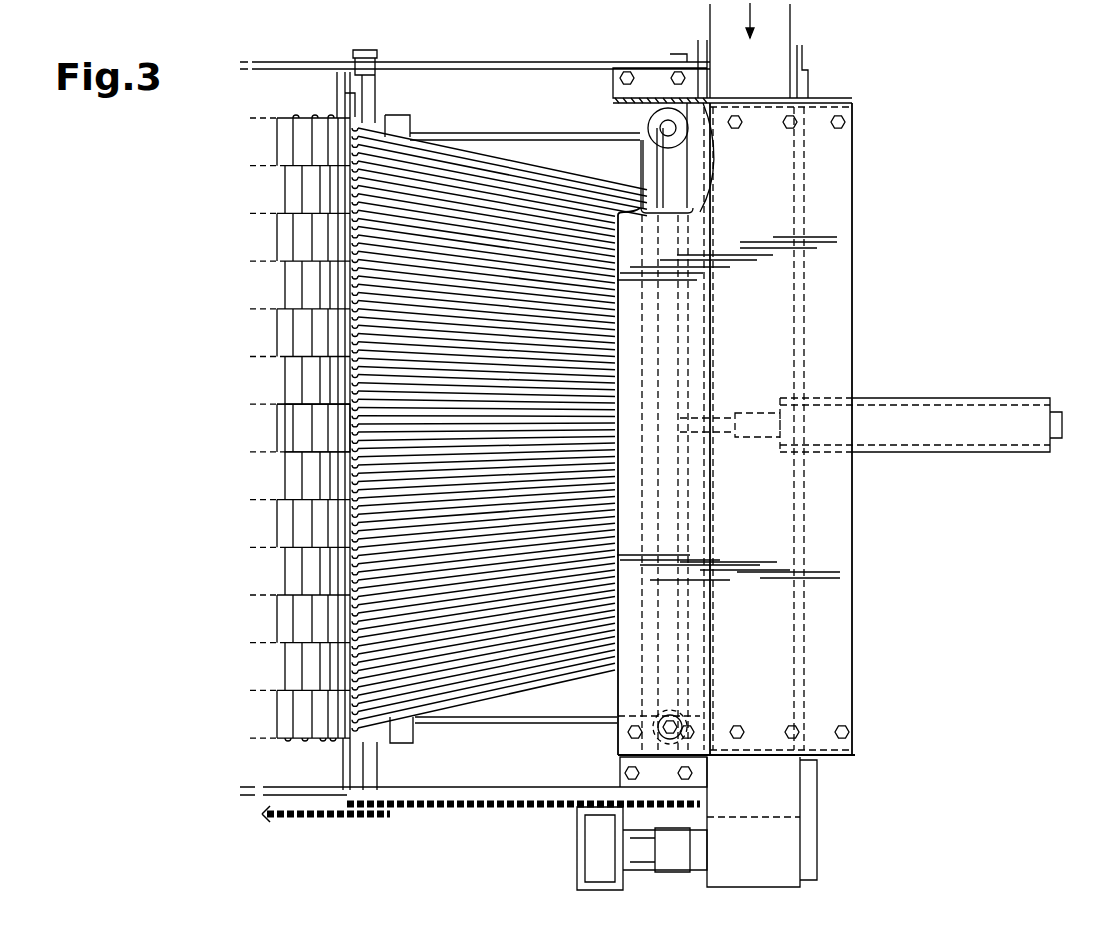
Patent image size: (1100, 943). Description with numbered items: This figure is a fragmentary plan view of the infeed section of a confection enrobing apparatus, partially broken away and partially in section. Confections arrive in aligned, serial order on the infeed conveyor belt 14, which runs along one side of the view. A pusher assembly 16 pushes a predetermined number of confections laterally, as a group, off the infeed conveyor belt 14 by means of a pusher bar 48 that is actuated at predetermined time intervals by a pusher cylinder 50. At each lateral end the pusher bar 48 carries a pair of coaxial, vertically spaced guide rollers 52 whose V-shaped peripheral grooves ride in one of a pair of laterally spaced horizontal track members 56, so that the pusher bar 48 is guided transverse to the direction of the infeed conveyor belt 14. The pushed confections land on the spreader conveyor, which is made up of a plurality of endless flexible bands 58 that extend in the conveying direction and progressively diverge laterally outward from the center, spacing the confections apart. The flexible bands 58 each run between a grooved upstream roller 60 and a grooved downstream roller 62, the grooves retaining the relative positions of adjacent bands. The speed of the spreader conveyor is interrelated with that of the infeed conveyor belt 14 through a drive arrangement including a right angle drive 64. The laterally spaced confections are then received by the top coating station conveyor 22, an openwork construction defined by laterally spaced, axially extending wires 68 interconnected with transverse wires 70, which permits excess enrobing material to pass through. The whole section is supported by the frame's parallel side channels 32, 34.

The infeed conveyor belt 14 is at (792, 26).
The pusher assembly 16 is at (963, 490).
The top coating station conveyor 22 is at (278, 118).
The side channel 32 is at (512, 788).
The side channel 34 is at (562, 60).
The pusher bar 48 is at (672, 190).
The pusher cylinder 50 is at (980, 397).
The guide rollers 52 is at (648, 116).
The track members 56 is at (770, 748).
The endless flexible bands 58 is at (548, 686).
The upstream roller 60 is at (688, 168).
The downstream roller 62 is at (375, 97).
The right angle drive 64 is at (578, 860).
The axially extending wires 68 is at (278, 404).
The transverse wires 70 is at (282, 436).